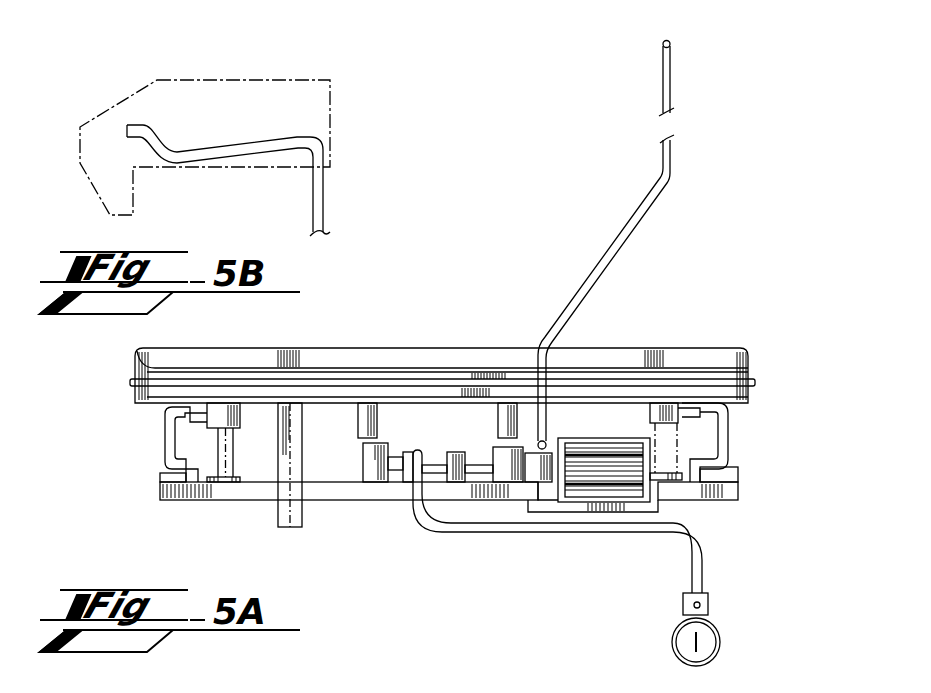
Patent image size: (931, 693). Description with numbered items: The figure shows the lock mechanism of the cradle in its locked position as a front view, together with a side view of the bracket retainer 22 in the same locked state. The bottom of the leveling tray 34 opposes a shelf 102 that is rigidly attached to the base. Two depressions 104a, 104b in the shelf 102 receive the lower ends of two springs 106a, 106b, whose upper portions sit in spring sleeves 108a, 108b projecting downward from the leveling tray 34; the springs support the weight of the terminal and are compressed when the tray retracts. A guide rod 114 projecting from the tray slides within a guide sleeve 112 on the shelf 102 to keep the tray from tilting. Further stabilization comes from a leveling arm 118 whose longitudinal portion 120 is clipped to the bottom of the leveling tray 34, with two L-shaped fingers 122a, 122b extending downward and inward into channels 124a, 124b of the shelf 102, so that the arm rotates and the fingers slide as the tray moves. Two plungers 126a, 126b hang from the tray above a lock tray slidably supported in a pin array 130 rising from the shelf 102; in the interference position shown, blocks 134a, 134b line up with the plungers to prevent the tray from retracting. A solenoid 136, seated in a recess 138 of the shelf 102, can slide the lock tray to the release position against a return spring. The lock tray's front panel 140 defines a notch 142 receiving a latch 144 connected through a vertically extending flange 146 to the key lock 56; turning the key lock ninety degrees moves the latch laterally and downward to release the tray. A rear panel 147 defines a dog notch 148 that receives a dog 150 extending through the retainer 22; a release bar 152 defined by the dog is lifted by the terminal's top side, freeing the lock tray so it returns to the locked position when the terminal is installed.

In FIG. 5B, the bracket retainer 22 is at (330, 83).
In FIG. 5A, the leveling tray 34 is at (137, 367).
In FIG. 5A, the key lock 56 is at (673, 648).
In FIG. 5A, the shelf 102 is at (738, 497).
In FIG. 5A, the depression 104a is at (230, 457).
In FIG. 5A, the depression 104b is at (673, 480).
In FIG. 5A, the spring 106a is at (223, 480).
In FIG. 5A, the spring 106b is at (668, 435).
In FIG. 5A, the spring sleeve 108a is at (227, 415).
In FIG. 5A, the spring sleeve 108b is at (660, 405).
In FIG. 5A, the guide sleeve 112 is at (283, 528).
In FIG. 5A, the guide rod 114 is at (340, 450).
In FIG. 5A, the leveling arm 118 is at (133, 427).
In FIG. 5A, the longitudinal portion 120 is at (267, 408).
In FIG. 5A, the L-shaped finger 122a is at (165, 437).
In FIG. 5A, the L-shaped finger 122b is at (745, 405).
In FIG. 5A, the channel 124a is at (178, 503).
In FIG. 5A, the channel 124b is at (737, 477).
In FIG. 5A, the plunger 126a is at (340, 432).
In FIG. 5A, the plunger 126b is at (500, 436).
In FIG. 5A, the pin array 130 is at (412, 477).
In FIG. 5A, the block 134a is at (373, 482).
In FIG. 5A, the block 134b is at (508, 477).
In FIG. 5A, the solenoid 136 is at (603, 482).
In FIG. 5A, the recess 138 is at (507, 523).
In FIG. 5A, the front panel 140 is at (480, 462).
In FIG. 5A, the notch 142 is at (430, 442).
In FIG. 5A, the latch 144 is at (702, 572).
In FIG. 5A, the flange 146 is at (708, 603).
In FIG. 5A, the rear panel 147 is at (553, 447).
In FIG. 5A, the dog notch 148 is at (537, 440).
In FIG. 5A, the dog 150 is at (593, 263).
In FIG. 5B, the dog 150 is at (323, 205).
In FIG. 5A, the release bar 152 is at (672, 56).
In FIG. 5B, the release bar 152 is at (247, 148).